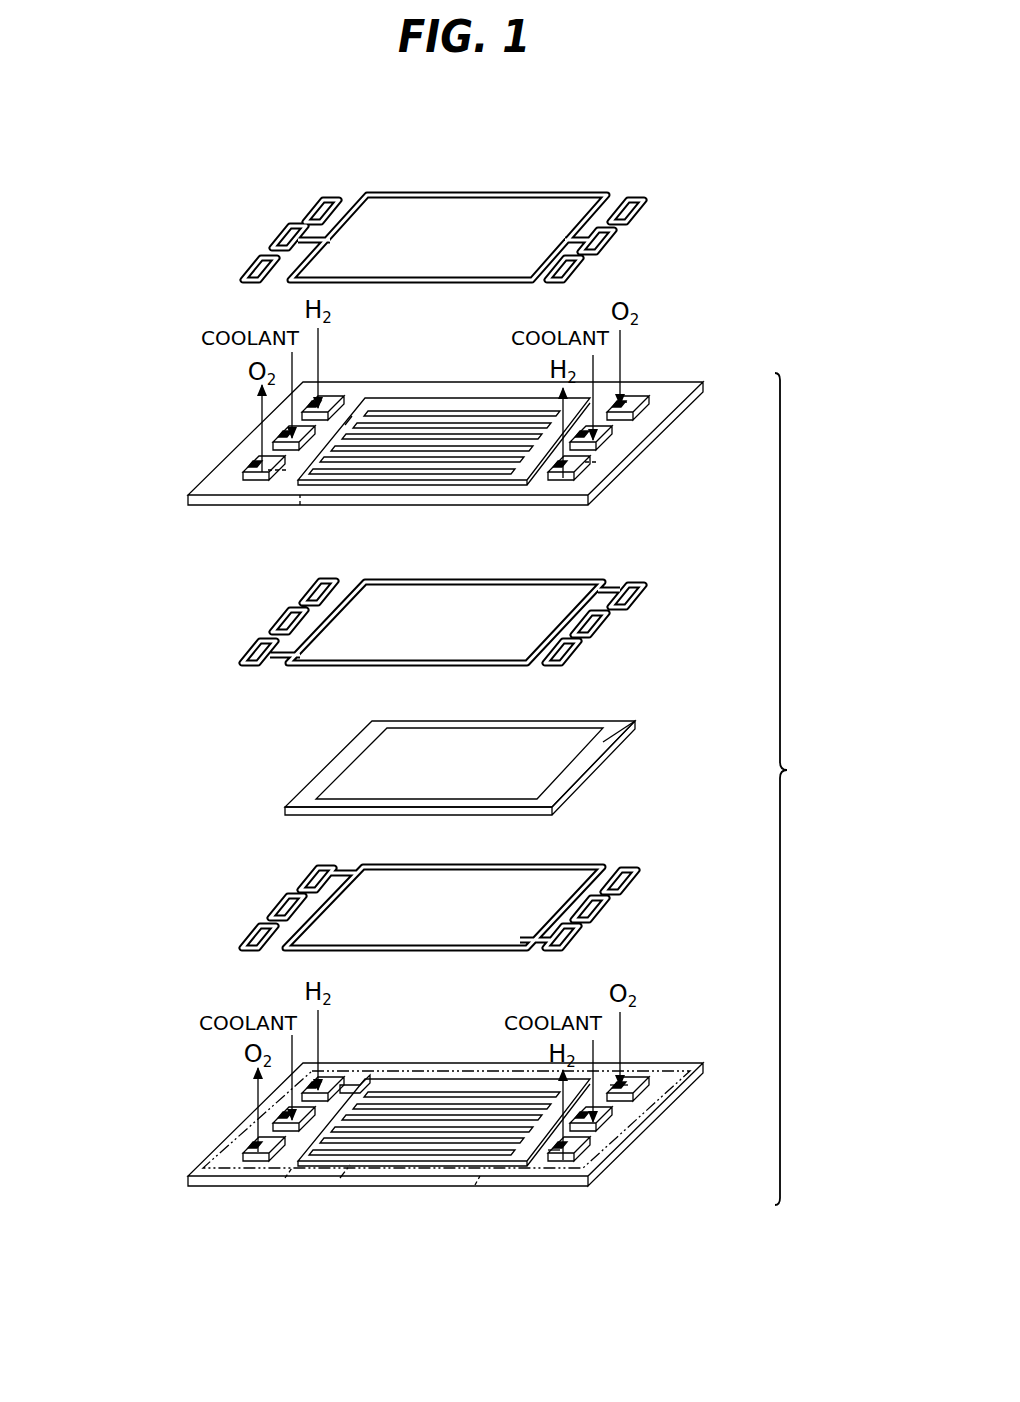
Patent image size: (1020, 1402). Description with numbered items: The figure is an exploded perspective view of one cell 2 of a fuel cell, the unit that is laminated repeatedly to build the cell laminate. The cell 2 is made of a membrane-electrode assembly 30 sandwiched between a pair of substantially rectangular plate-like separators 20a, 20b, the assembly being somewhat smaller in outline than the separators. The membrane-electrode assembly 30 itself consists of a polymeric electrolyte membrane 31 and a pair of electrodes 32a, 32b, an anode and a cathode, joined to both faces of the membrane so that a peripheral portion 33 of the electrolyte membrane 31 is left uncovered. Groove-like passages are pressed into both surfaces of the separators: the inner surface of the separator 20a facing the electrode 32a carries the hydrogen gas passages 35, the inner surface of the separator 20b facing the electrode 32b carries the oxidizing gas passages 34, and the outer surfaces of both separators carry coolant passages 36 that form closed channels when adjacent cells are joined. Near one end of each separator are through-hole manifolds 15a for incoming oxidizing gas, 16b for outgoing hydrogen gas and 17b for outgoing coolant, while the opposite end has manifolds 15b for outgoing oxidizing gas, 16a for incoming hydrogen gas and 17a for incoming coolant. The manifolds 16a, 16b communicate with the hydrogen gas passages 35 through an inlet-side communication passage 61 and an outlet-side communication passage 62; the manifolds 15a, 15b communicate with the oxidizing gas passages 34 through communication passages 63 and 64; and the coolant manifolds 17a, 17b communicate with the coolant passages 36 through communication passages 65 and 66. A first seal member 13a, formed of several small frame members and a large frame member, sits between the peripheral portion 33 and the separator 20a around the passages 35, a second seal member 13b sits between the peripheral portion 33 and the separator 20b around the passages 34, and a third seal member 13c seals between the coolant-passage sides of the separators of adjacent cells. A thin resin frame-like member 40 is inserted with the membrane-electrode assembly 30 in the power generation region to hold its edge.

The cell 2 is at (793, 789).
The first seal member 13a is at (263, 893).
The second seal member 13b is at (263, 605).
The third seal member 13c is at (283, 212).
The inlet-side manifold of the oxidizing gas 15a is at (252, 472).
The outlet-side manifold of the oxidizing gas 15b is at (645, 402).
The inlet-side manifold of the hydrogen gas 16a is at (566, 502).
The outlet-side manifold of the hydrogen gas 16b is at (318, 412).
The inlet-side manifold of the coolant 17a is at (612, 437).
The outlet-side manifold of the coolant 17b is at (290, 443).
The separator 20a is at (186, 1180).
The separator 20b is at (186, 500).
The membrane-electrode assembly 30 is at (414, 779).
The polymeric electrolyte membrane 31 is at (300, 790).
The electrode 32a is at (315, 815).
The electrode 32b is at (340, 770).
The peripheral portion 33 is at (603, 742).
The gas passages of the oxidizing gas 34 is at (302, 507).
The gas passages of the hydrogen gas 35 is at (435, 1145).
The coolant passages 36 is at (447, 425).
The frame-like member 40 is at (340, 1178).
The inlet-side communication passage 61 is at (560, 1152).
The outlet-side communication passage 62 is at (358, 1085).
The inlet-side communication passage 63 is at (272, 483).
The outlet-side communication passage 64 is at (628, 400).
The inlet-side communication passage 65 is at (595, 458).
The outlet-side communication passage 66 is at (345, 415).